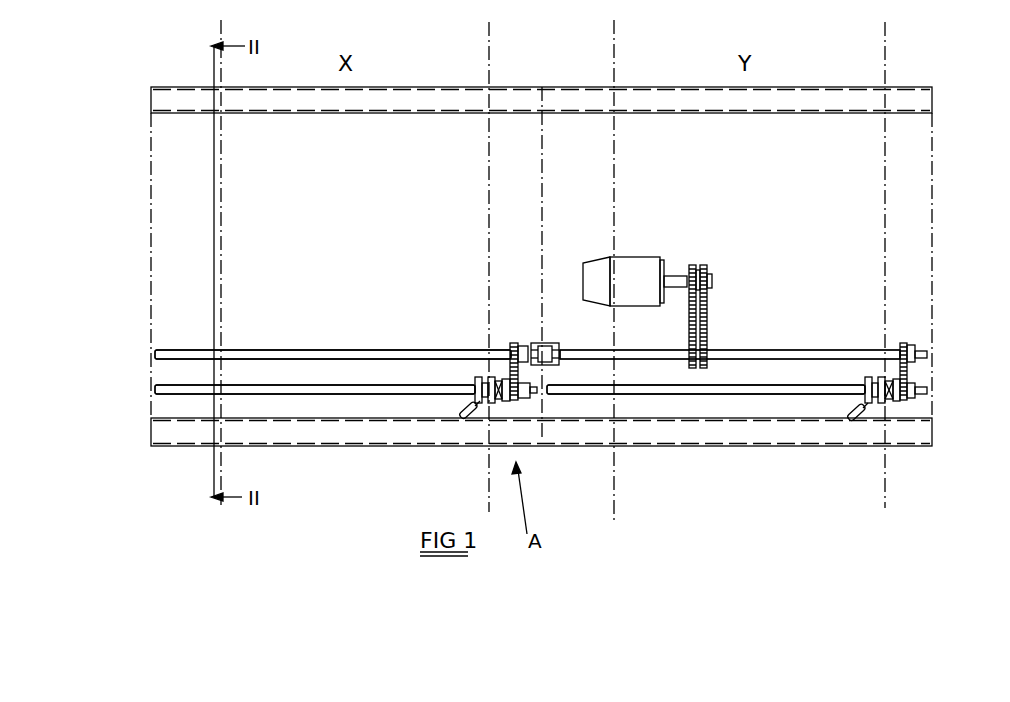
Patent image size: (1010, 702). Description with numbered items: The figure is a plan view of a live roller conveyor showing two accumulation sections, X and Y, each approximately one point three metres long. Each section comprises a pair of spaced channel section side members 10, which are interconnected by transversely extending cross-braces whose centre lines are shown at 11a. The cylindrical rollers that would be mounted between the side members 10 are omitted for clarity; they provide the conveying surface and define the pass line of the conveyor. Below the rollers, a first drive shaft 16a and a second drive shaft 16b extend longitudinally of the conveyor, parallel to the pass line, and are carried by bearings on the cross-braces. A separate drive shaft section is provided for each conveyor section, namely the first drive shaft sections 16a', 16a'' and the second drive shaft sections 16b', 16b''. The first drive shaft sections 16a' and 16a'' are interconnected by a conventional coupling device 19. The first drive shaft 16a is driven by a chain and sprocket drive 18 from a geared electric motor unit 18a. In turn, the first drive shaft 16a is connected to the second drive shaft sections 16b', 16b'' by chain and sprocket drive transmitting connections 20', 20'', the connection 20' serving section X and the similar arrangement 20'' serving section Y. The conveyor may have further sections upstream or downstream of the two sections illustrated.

The side member 10 is at (932, 95).
The centre line of cross-brace 11a is at (969, 490).
The first drive shaft 16a is at (576, 352).
The first drive shaft section 16a' is at (333, 333).
The first drive shaft section 16a'' is at (730, 333).
The second drive shaft 16b is at (576, 390).
The second drive shaft section 16b' is at (315, 377).
The second drive shaft section 16b'' is at (706, 376).
The chain and sprocket drive 18 is at (708, 272).
The geared electric motor unit 18a is at (657, 262).
The coupling device 19 is at (545, 343).
The chain and sprocket drive transmitting connection 20' is at (498, 343).
The chain and sprocket drive transmitting connection 20'' is at (881, 344).